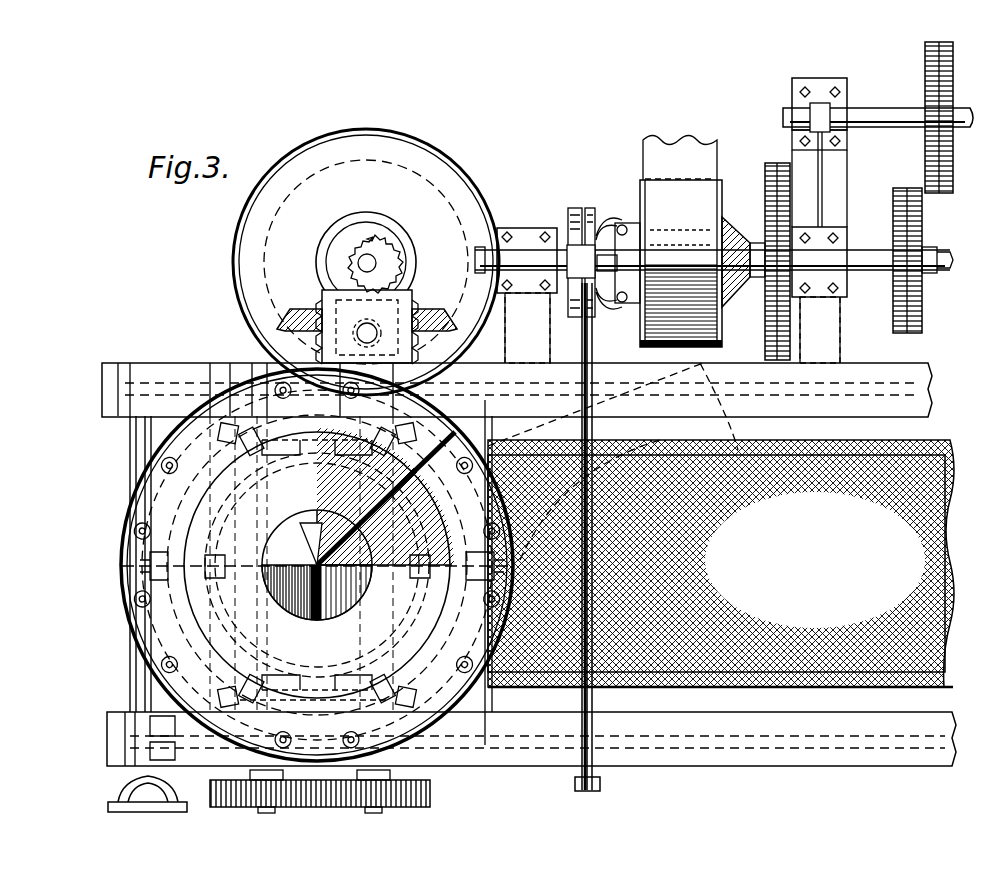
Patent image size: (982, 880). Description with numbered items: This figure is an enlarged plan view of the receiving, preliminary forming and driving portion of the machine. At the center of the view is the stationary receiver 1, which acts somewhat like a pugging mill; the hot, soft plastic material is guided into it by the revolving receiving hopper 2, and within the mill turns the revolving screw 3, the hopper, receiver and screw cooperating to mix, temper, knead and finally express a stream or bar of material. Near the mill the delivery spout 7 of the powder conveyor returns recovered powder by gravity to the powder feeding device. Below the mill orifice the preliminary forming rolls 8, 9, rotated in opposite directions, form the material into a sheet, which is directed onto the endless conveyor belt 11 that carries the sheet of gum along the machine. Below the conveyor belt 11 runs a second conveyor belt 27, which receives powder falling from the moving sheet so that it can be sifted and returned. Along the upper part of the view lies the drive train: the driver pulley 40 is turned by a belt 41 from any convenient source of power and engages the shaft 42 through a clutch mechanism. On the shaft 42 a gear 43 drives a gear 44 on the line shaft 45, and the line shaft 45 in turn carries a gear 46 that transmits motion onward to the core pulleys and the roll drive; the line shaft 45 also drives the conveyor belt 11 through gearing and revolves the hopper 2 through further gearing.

The stationary receiver 1 is at (317, 565).
The revolving receiving hopper 2 is at (170, 626).
The revolving screw 3 is at (358, 524).
The delivery spout 7 is at (660, 525).
The preliminary forming roll 8 is at (296, 604).
The preliminary forming roll 9 is at (344, 602).
The endless conveyor belt 11 is at (721, 563).
The second conveyor belt 27 is at (852, 679).
The driver pulley 40 is at (640, 195).
The belt 41 is at (712, 152).
The shaft 42 is at (612, 303).
The gear 43 is at (756, 242).
The gear 44 is at (777, 335).
The line shaft 45 is at (867, 272).
The gear 46 is at (915, 312).